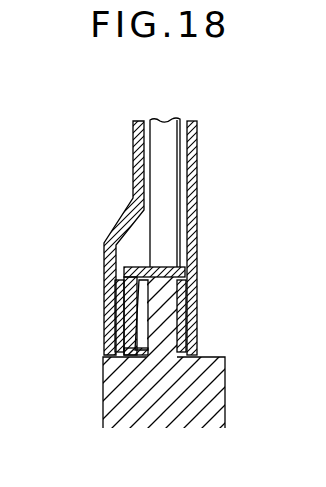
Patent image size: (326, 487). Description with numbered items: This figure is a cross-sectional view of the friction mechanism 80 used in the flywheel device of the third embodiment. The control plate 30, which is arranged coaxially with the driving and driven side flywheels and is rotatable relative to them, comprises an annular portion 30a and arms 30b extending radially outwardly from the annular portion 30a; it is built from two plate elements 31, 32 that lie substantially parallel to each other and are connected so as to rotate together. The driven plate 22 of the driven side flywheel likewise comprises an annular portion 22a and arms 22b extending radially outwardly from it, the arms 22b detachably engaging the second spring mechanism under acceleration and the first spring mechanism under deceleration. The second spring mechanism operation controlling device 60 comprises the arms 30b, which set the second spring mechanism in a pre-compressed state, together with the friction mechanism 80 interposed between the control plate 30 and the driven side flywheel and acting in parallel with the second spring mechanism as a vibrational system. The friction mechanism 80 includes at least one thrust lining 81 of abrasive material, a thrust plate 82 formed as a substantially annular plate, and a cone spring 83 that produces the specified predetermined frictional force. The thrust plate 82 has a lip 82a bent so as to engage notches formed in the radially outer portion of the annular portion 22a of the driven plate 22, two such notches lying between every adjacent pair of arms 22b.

The driven plate 22 is at (199, 352).
The annular portion 22a is at (203, 405).
The arms 22b is at (167, 168).
The control plate 30 is at (250, 93).
The annular portion 30a is at (108, 330).
The arms 30b is at (136, 160).
The plate element 31 is at (136, 122).
The plate element 32 is at (195, 122).
The second spring mechanism operation controlling device 60 is at (194, 283).
The friction mechanism 80 is at (142, 287).
The thrust lining 81 is at (114, 302).
The thrust plate 82 is at (142, 287).
The lip 82a is at (163, 267).
The cone spring 83 is at (137, 333).